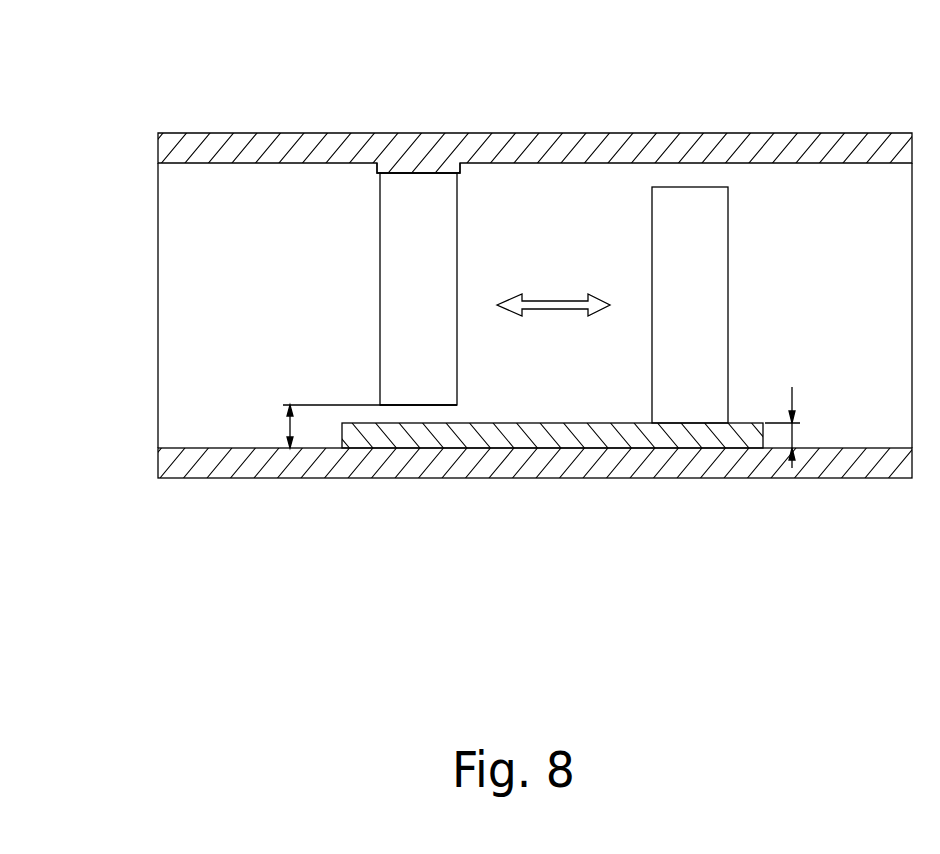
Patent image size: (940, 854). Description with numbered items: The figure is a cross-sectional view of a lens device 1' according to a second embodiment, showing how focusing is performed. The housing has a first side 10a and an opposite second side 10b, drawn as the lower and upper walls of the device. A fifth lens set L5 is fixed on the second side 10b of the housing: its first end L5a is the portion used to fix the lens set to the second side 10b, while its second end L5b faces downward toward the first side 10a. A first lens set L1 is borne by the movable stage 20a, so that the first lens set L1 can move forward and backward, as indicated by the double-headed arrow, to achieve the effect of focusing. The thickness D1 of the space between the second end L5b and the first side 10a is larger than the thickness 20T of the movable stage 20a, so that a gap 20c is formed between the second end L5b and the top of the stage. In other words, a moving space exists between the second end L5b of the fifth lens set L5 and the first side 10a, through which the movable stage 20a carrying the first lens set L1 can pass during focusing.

The lens device 1' is at (484, 298).
The first side 10a is at (185, 448).
The second side 10b is at (185, 164).
The fifth lens set L5 is at (392, 228).
The first end L5a is at (421, 172).
The second end L5b is at (398, 405).
The first lens set L1 is at (716, 228).
The movable stage 20a is at (597, 440).
The gap 20c is at (437, 425).
The thickness of the first stage 20T is at (802, 427).
The thickness of the space D1 is at (316, 426).